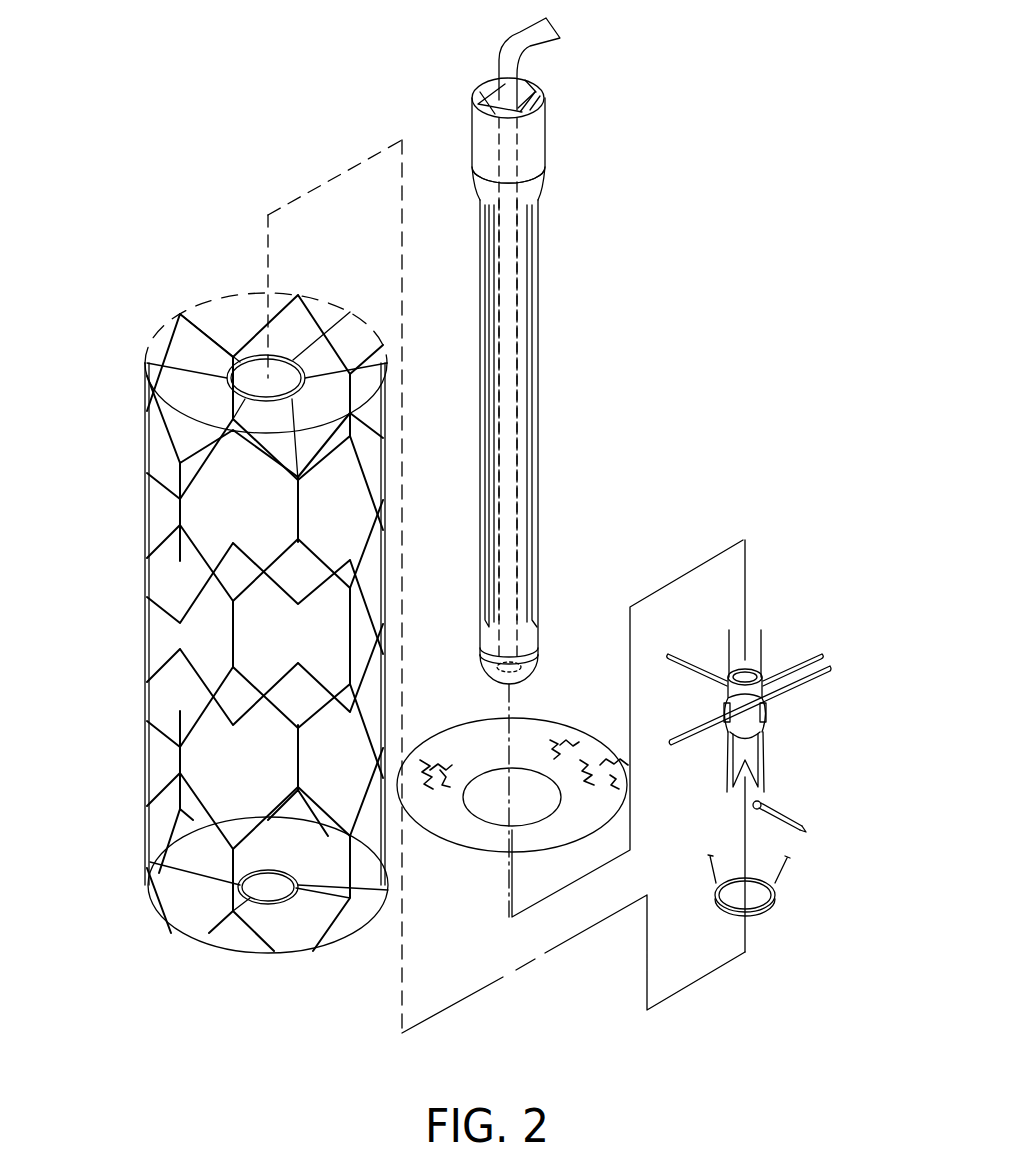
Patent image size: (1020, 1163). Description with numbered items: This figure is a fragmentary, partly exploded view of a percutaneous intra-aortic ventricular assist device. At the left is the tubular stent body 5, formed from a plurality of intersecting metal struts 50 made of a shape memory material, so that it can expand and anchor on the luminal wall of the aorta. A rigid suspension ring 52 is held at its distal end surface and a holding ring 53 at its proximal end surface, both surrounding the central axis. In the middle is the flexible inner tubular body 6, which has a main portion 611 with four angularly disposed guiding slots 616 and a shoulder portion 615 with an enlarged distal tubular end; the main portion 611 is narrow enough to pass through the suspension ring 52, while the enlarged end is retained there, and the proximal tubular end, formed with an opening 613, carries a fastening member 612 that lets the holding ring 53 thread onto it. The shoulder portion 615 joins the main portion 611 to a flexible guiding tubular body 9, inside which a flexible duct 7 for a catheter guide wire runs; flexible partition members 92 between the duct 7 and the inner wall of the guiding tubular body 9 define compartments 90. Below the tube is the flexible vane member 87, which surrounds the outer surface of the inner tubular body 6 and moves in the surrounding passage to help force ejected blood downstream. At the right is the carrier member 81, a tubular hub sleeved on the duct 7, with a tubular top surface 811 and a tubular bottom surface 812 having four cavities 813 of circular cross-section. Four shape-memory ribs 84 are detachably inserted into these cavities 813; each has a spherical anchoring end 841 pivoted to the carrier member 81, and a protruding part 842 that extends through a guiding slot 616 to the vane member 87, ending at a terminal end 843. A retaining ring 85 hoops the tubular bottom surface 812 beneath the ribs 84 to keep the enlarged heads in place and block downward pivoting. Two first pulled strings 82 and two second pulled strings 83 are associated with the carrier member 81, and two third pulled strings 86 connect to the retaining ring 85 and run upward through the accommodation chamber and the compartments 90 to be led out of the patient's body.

The tubular stent body 5 is at (236, 639).
The metal struts 50 is at (205, 587).
The rigid suspension ring 52 is at (232, 364).
The holding ring 53 is at (270, 905).
The inner tubular body 6 is at (523, 351).
The main portion 611 is at (523, 370).
The fastening member 612 is at (531, 657).
The opening 613 is at (538, 672).
The shoulder portion 615 is at (525, 190).
The guiding slots 616 is at (490, 578).
The flexible duct 7 is at (527, 37).
The flexible guiding tubular body 9 is at (506, 109).
The compartments 90 is at (478, 102).
The flexible partition members 92 is at (533, 96).
The carrier member 81 is at (764, 717).
The tubular top surface 811 is at (726, 686).
The tubular bottom surface 812 is at (766, 712).
The cavities 813 is at (828, 669).
The first pulled strings 82 is at (730, 645).
The second pulled strings 83 is at (762, 767).
The ribs 84 is at (680, 645).
The anchoring end 841 is at (760, 805).
The protruding part 842 is at (806, 818).
The terminal end 843 is at (805, 834).
The retaining ring 85 is at (753, 910).
The third pulled strings 86 is at (712, 880).
The vane member 87 is at (455, 812).